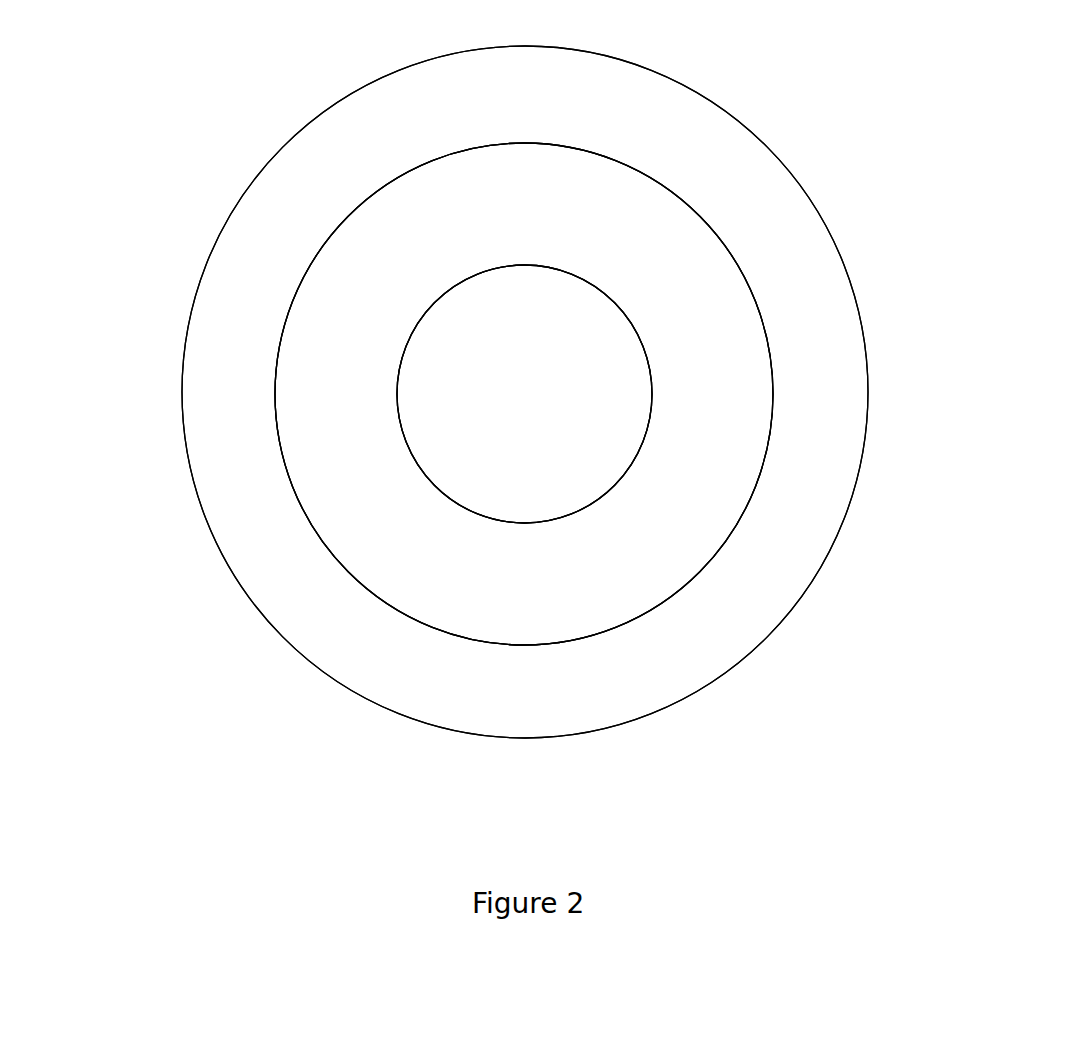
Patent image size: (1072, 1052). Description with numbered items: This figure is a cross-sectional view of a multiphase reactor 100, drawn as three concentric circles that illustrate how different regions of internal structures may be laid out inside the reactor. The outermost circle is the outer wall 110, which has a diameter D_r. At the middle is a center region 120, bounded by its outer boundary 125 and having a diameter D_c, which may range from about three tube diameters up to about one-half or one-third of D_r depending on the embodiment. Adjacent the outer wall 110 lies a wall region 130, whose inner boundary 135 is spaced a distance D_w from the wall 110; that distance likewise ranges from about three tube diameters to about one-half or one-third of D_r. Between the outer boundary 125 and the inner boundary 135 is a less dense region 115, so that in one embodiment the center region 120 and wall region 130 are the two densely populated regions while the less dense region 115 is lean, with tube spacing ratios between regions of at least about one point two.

The multiphase reactor 100 is at (940, 128).
The outer wall 110 is at (192, 475).
The less dense region 115 is at (597, 218).
The center region 120 is at (560, 483).
The outer boundary 125 is at (440, 298).
The wall region 130 is at (822, 483).
The inner boundary 135 is at (310, 525).